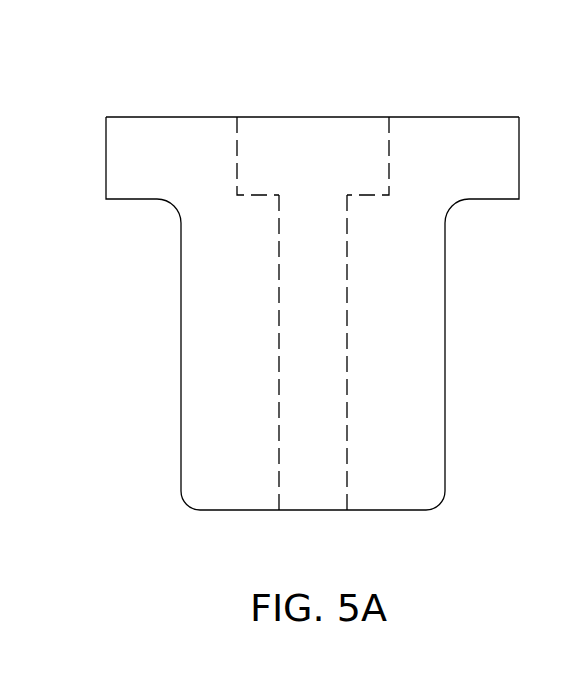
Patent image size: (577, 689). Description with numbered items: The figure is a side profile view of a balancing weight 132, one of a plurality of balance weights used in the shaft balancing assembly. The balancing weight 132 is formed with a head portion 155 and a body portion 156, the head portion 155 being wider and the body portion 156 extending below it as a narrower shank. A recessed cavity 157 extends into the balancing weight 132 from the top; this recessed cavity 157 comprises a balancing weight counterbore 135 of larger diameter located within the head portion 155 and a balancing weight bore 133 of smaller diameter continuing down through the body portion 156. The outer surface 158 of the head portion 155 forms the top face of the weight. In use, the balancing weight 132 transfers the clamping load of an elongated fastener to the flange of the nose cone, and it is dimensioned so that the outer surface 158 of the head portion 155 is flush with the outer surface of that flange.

The balancing weight 132 is at (275, 257).
The balancing weight bore 133 is at (335, 378).
The balancing weight counterbore 135 is at (351, 136).
The head portion 155 is at (120, 167).
The body portion 156 is at (181, 405).
The recessed cavity 157 is at (295, 92).
The outer surface 158 is at (490, 117).